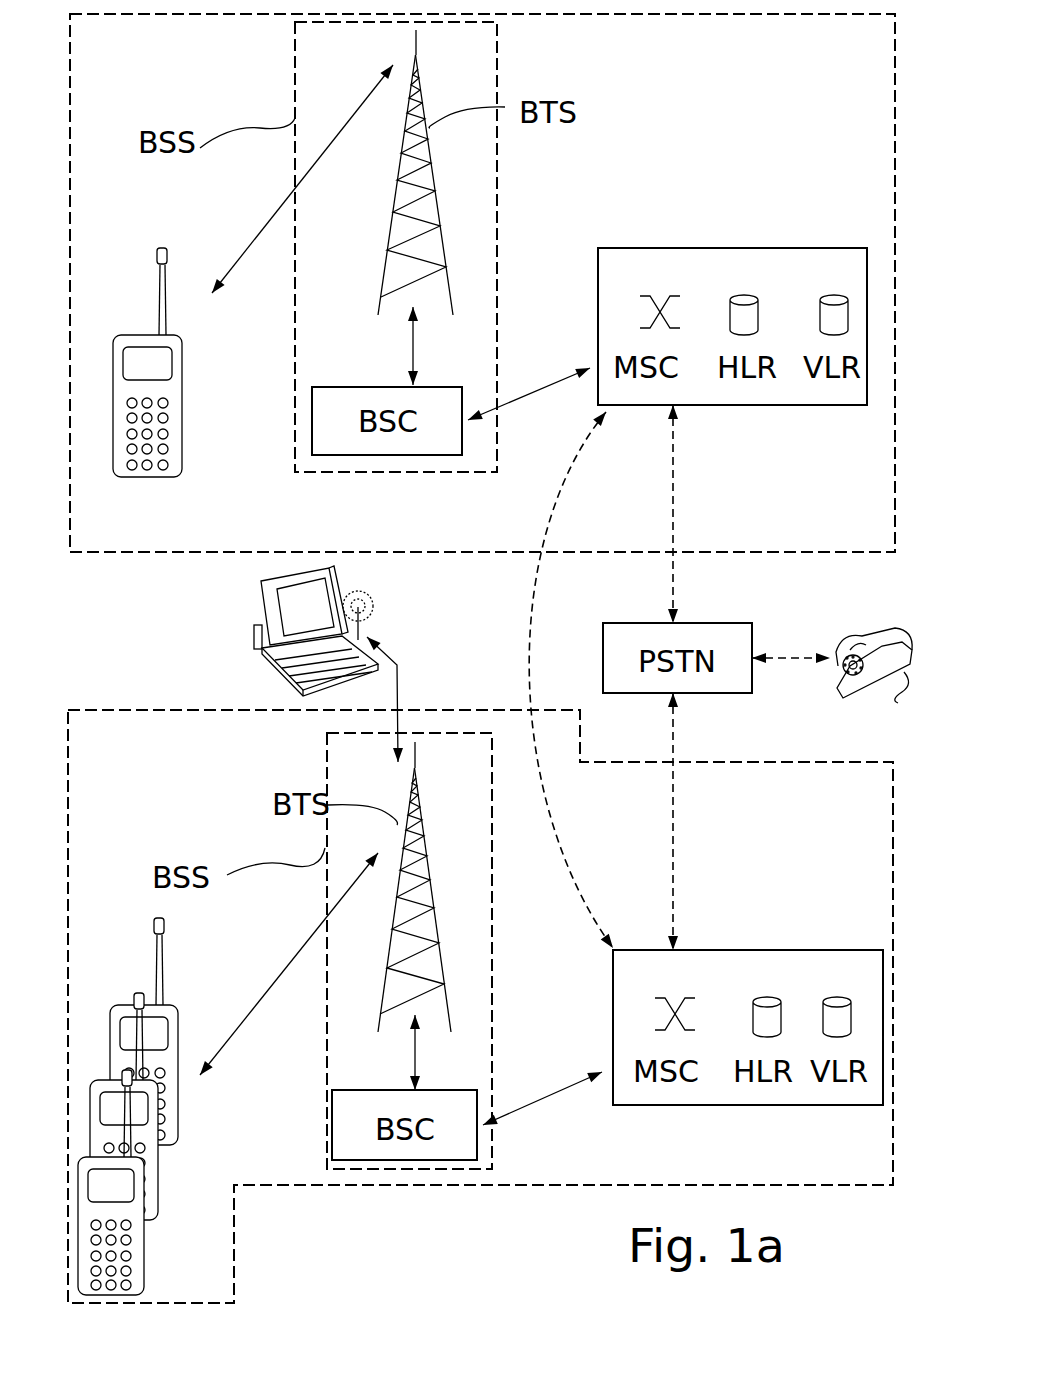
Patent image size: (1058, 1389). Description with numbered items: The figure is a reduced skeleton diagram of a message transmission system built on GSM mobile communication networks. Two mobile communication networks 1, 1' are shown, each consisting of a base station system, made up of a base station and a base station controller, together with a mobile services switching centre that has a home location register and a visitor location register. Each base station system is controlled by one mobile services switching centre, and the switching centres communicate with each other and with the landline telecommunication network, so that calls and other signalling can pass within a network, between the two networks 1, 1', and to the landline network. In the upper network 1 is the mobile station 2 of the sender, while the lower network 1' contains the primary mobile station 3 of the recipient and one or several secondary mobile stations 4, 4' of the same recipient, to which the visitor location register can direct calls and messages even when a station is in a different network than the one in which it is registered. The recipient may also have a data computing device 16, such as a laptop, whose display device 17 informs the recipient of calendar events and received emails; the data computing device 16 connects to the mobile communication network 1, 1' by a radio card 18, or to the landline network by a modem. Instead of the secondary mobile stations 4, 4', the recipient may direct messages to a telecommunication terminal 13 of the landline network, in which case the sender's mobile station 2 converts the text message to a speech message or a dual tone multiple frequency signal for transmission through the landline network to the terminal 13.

The mobile communication network 1 is at (482, 316).
The mobile communication network 1' is at (480, 1006).
The mobile station of the sender 2 is at (182, 397).
The primary mobile station 3 is at (144, 1255).
The secondary mobile station 4 is at (182, 1106).
The secondary mobile station 4' is at (173, 1031).
The telecommunication terminal 13 is at (882, 686).
The data computing device 16 is at (262, 648).
The display device 17 is at (293, 612).
The radio card 18 is at (363, 630).